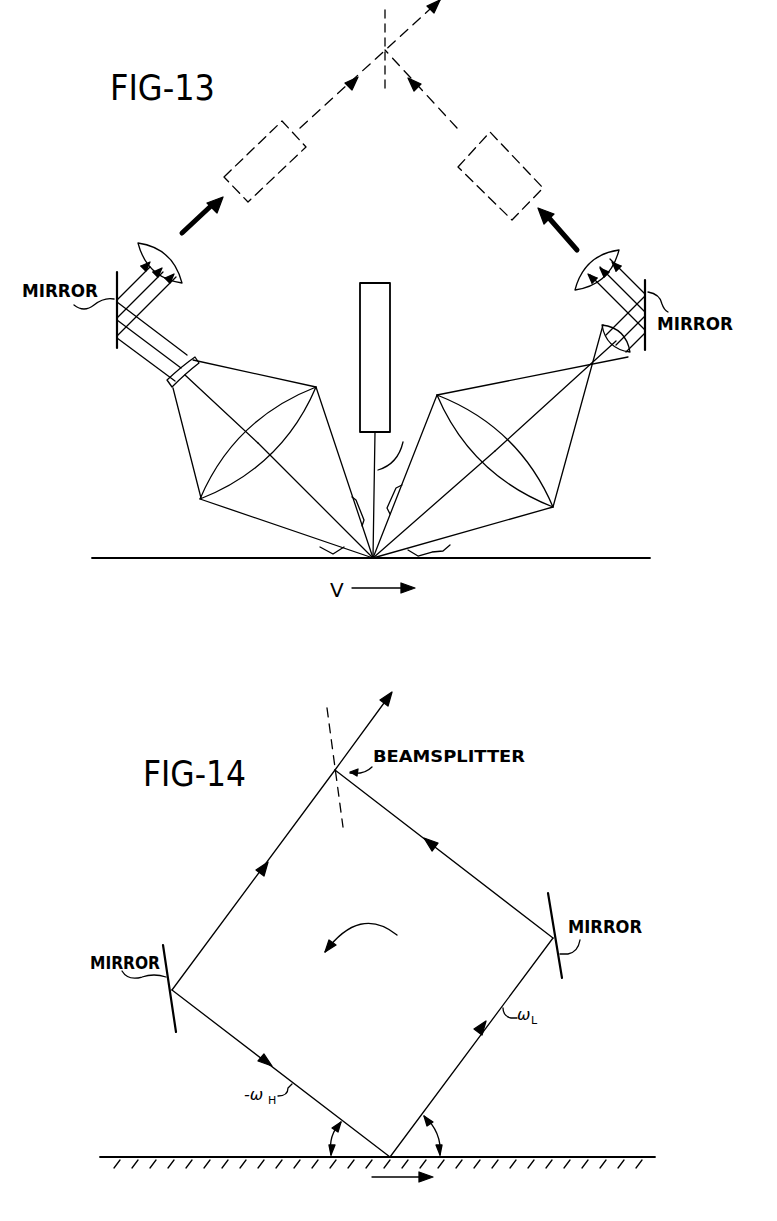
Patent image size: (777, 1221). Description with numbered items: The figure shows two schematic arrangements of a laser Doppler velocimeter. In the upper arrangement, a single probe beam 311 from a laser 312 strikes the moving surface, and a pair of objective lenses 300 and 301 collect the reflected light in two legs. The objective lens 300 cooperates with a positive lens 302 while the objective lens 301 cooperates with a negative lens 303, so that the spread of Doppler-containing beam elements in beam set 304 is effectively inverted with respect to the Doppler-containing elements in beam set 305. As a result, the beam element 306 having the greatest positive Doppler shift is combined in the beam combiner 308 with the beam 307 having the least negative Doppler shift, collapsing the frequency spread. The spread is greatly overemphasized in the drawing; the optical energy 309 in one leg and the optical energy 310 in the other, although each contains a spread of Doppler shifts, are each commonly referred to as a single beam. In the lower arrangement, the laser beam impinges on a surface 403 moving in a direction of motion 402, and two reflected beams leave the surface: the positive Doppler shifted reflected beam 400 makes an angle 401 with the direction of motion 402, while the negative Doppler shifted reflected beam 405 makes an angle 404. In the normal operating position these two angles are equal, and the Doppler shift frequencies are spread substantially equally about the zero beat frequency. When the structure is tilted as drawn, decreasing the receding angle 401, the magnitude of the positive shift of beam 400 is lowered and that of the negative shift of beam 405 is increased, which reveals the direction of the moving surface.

In FIG. 13, the objective lens 300 is at (553, 507).
In FIG. 13, the objective lens 301 is at (203, 500).
In FIG. 13, the positive lens 302 is at (630, 352).
In FIG. 13, the negative lens 303 is at (162, 386).
In FIG. 13, the beam set 304 is at (437, 552).
In FIG. 13, the beam set 305 is at (319, 552).
In FIG. 13, the beam element 306 is at (503, 517).
In FIG. 13, the beam 307 is at (133, 275).
In FIG. 13, the beam combiner 308 is at (380, 34).
In FIG. 13, the optical energy 309 is at (607, 248).
In FIG. 13, the optical energy 310 is at (147, 243).
In FIG. 13, the probe beam 311 is at (401, 444).
In FIG. 13, the laser 312 is at (391, 352).
In FIG. 14, the reflected beam 400 is at (468, 1048).
In FIG. 14, the angle 401 is at (440, 1130).
In FIG. 14, the direction of motion 402 is at (412, 1178).
In FIG. 14, the surface 403 is at (567, 1157).
In FIG. 14, the angle 404 is at (328, 1136).
In FIG. 14, the reflected beam 405 is at (235, 1042).